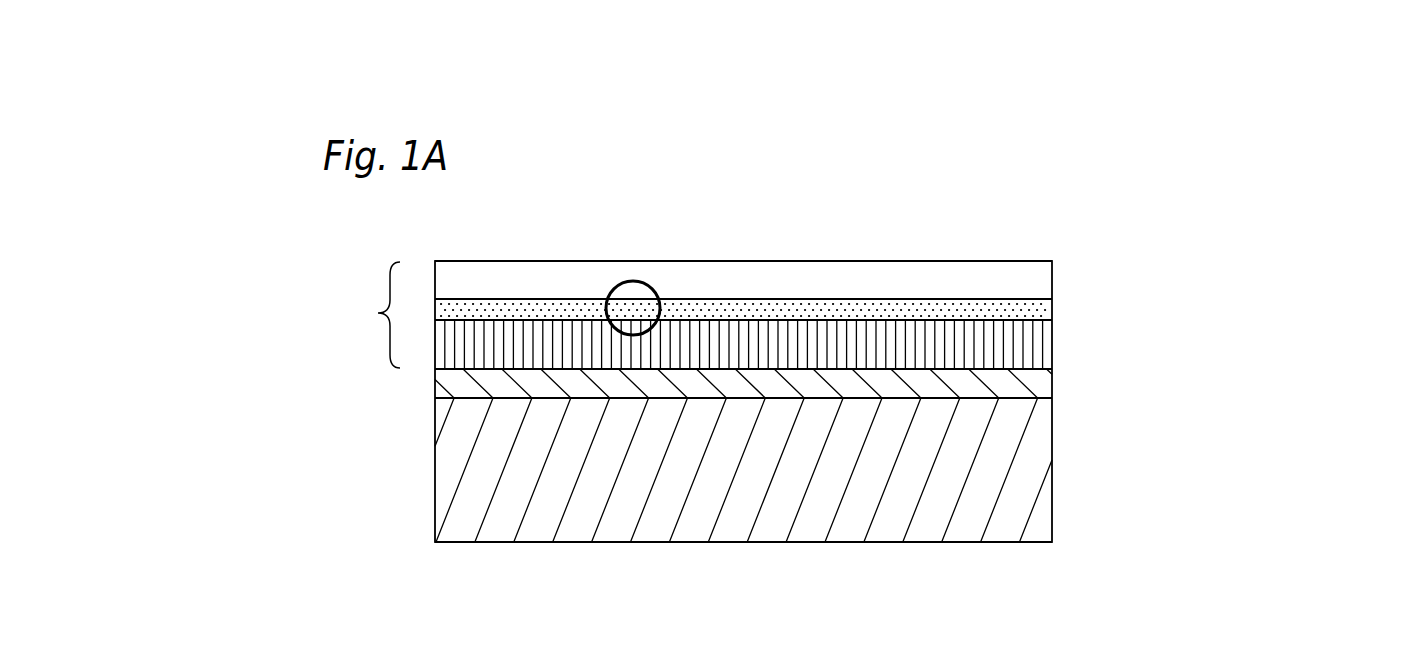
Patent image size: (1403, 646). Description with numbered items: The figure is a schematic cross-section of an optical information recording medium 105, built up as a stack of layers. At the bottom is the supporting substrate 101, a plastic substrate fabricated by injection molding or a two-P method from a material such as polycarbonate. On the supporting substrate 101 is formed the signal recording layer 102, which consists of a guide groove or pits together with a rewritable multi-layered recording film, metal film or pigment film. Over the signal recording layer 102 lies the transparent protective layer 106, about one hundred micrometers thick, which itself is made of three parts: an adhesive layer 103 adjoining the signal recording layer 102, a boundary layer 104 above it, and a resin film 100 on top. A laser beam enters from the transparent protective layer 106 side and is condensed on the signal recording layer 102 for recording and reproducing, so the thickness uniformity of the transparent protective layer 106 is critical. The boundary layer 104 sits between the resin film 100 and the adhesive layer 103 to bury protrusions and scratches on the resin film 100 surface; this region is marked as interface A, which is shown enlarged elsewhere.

The resin film 100 is at (1015, 275).
The supporting substrate 101 is at (1042, 480).
The signal recording layer 102 is at (1037, 383).
The adhesive layer 103 is at (1035, 348).
The boundary layer 104 is at (1040, 310).
The optical information recording medium 105 is at (807, 552).
The transparent protective layer 106 is at (376, 313).
The interface A is at (653, 287).